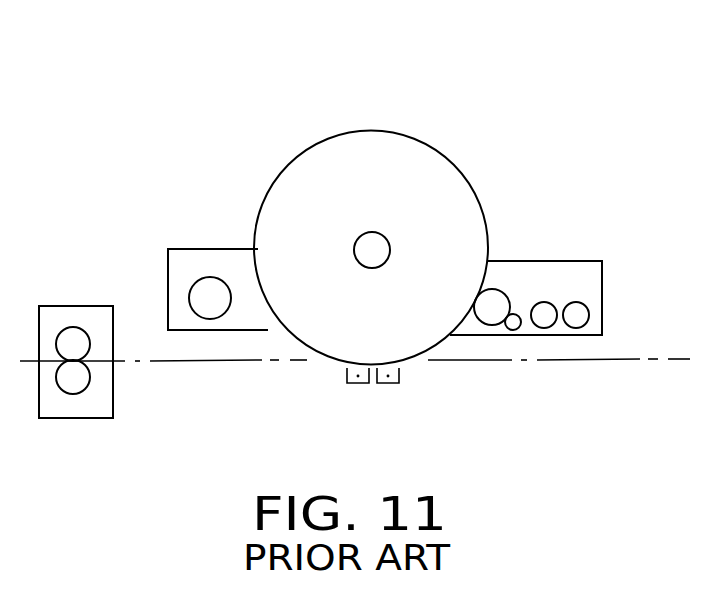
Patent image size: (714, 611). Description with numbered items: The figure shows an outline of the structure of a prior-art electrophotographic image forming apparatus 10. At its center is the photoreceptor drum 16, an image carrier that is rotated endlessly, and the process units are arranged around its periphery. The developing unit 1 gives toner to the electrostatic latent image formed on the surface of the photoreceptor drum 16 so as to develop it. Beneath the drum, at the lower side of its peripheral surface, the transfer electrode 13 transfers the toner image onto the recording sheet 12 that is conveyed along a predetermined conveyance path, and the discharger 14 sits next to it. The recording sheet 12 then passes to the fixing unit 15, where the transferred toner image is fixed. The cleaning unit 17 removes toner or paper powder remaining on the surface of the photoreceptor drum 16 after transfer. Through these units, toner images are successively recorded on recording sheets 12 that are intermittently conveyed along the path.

The developing unit 1 is at (558, 260).
The electrophotographic image forming apparatus 10 is at (558, 84).
The recording sheet 12 is at (200, 363).
The transfer electrode 13 is at (386, 385).
The discharger 14 is at (364, 385).
The fixing unit 15 is at (68, 305).
The photoreceptor drum 16 is at (456, 135).
The cleaning unit 17 is at (211, 248).